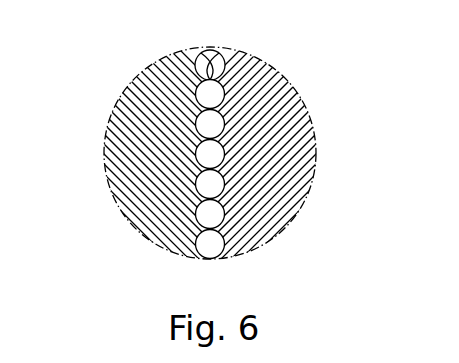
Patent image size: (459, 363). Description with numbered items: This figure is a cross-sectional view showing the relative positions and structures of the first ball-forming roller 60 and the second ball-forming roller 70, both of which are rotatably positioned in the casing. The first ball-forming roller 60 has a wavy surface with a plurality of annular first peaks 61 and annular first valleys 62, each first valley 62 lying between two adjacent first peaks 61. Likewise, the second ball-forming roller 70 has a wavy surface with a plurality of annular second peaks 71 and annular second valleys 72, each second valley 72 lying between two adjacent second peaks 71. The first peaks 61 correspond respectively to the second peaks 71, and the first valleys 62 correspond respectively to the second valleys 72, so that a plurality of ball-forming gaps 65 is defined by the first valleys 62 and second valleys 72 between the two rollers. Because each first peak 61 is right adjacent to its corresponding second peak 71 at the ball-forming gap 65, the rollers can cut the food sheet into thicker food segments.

The first ball-forming roller 60 is at (143, 136).
The second ball-forming roller 70 is at (283, 160).
The first peak 61 is at (199, 57).
The second peak 71 is at (227, 56).
The first valley 62 is at (193, 97).
The second valley 72 is at (228, 90).
The ball-forming gap 65 is at (215, 127).